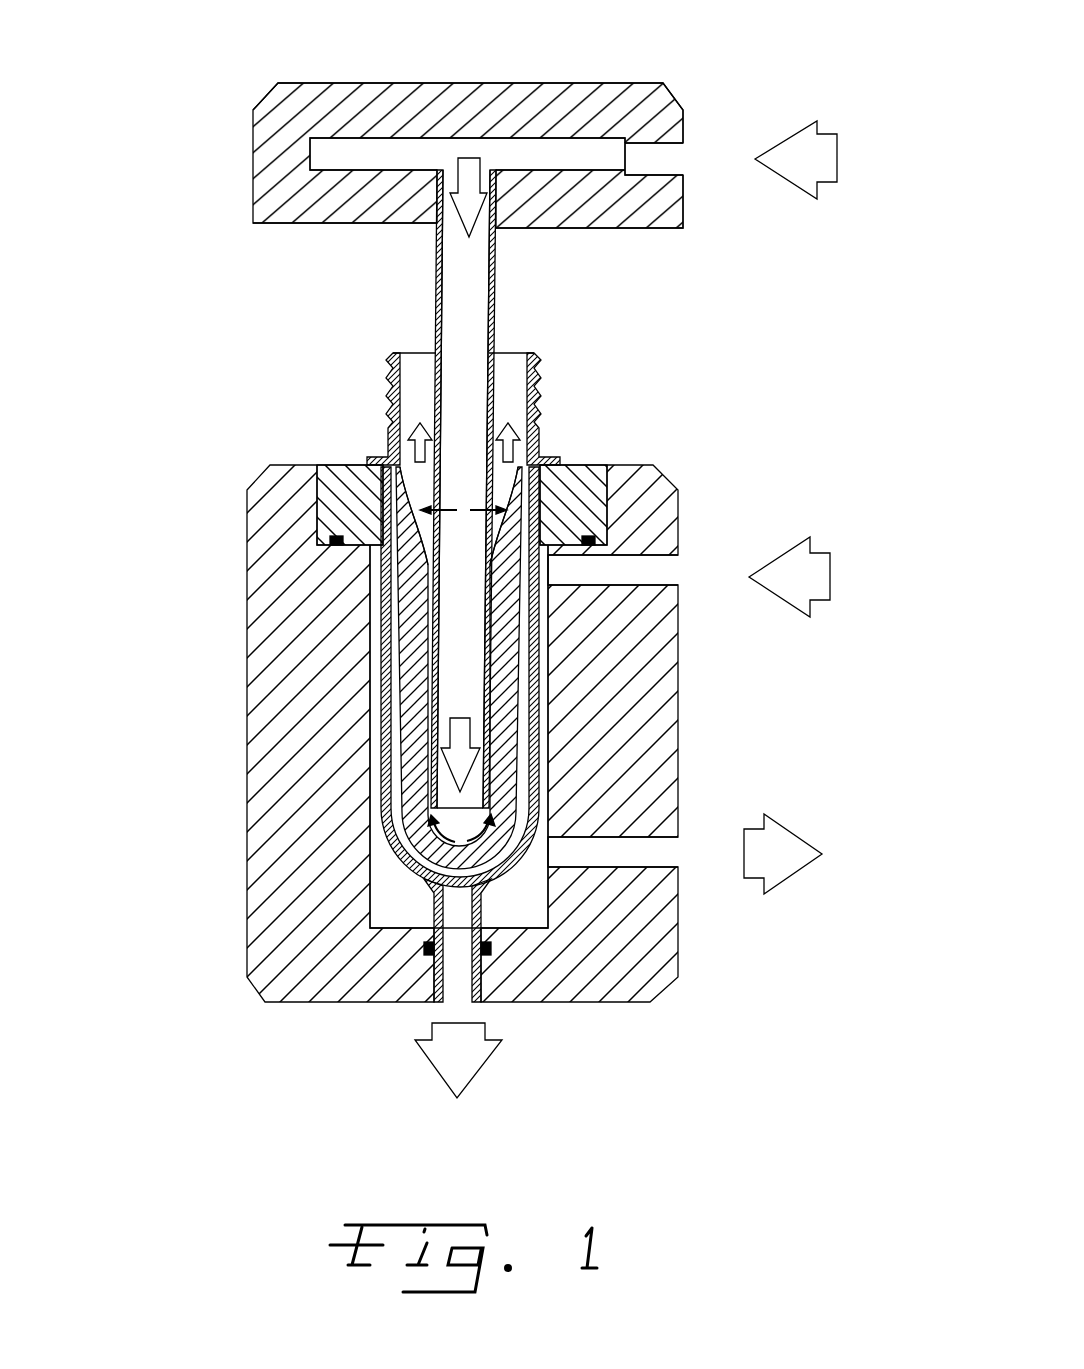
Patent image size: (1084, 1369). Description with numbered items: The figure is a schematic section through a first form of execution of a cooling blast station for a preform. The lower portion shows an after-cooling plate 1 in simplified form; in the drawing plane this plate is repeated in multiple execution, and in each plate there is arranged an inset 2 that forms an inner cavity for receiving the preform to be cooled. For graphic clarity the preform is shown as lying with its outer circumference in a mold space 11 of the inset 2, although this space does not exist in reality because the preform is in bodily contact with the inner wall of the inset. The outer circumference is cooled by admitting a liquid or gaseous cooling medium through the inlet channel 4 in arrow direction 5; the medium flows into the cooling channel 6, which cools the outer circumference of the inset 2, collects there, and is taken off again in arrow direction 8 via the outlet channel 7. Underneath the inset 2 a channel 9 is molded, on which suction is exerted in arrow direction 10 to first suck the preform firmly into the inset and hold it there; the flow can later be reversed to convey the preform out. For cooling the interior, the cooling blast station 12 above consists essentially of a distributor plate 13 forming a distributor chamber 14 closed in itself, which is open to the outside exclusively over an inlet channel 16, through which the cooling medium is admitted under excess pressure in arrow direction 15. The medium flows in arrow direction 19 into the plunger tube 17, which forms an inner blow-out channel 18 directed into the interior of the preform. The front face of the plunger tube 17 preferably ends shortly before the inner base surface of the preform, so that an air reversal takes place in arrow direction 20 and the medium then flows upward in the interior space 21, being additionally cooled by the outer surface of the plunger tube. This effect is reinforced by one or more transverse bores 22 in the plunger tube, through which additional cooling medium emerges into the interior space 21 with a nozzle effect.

The after-cooling plate 1 is at (665, 715).
The inset 2 is at (587, 482).
The inlet channel 4 is at (668, 568).
The arrow direction 5 is at (830, 573).
The cooling channel 6 is at (550, 678).
The outlet channel 7 is at (668, 860).
The arrow direction 8 is at (799, 834).
The channel 9 is at (457, 963).
The arrow direction 10 is at (480, 1068).
The mold space 11 is at (395, 693).
The cooling blast station 12 is at (742, 72).
The distributor plate 13 is at (622, 100).
The distributor chamber 14 is at (535, 155).
The arrow direction 15 is at (838, 152).
The inlet channel 16 is at (683, 165).
The plunger tube 17 is at (497, 265).
The blow-out channel 18 is at (467, 290).
The arrow direction 19 is at (456, 165).
The arrow direction 20 is at (397, 435).
The interior space 21 is at (423, 490).
The transverse bore 22 is at (442, 507).